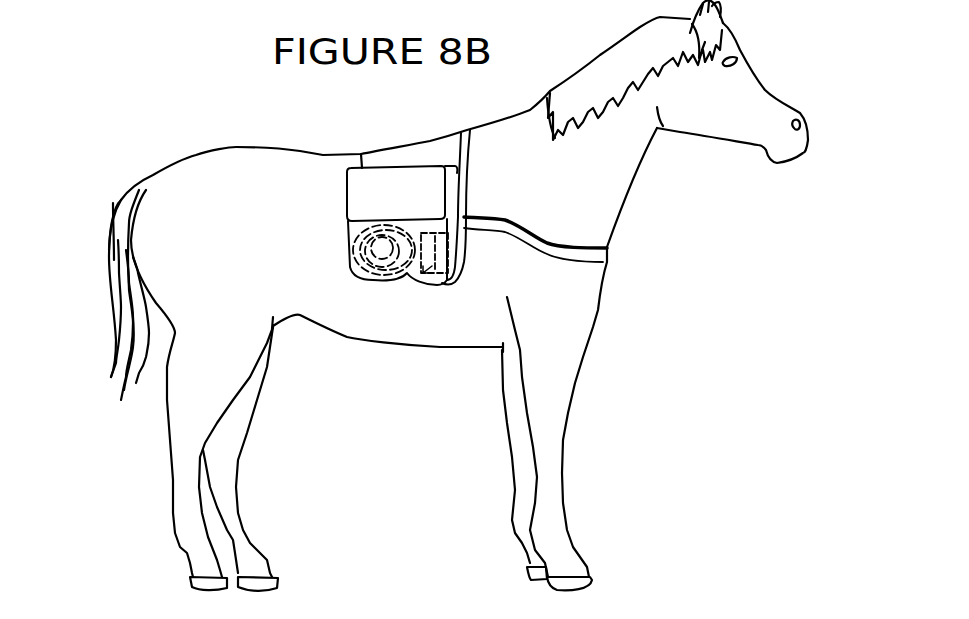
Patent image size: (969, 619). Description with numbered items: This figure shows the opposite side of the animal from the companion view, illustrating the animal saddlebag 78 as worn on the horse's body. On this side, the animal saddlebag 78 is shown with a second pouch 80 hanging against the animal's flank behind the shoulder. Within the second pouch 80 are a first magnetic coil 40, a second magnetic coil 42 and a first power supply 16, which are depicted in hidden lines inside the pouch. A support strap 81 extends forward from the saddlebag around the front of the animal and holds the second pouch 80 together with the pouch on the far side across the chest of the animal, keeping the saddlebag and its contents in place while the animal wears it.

The animal saddlebag 78 is at (408, 152).
The second pouch 80 is at (358, 197).
The first power supply 16 is at (447, 288).
The first magnetic coil 40 is at (358, 262).
The second magnetic coil 42 is at (407, 280).
The support strap 81 is at (610, 250).